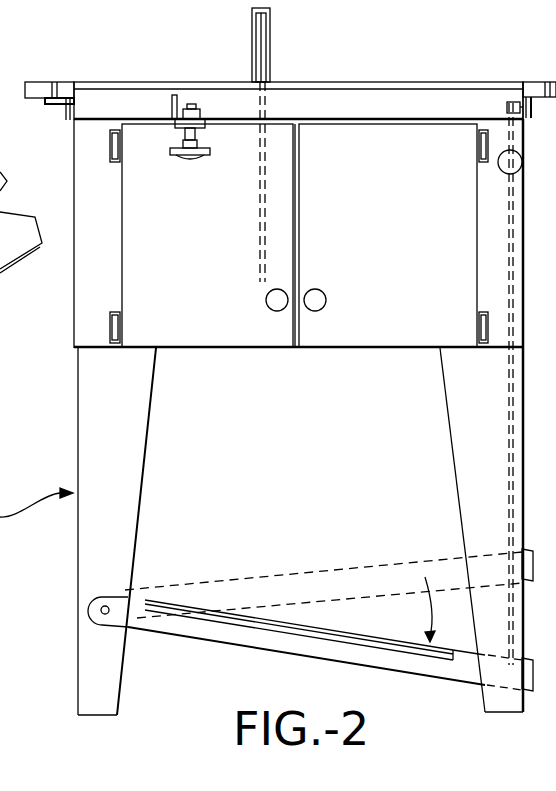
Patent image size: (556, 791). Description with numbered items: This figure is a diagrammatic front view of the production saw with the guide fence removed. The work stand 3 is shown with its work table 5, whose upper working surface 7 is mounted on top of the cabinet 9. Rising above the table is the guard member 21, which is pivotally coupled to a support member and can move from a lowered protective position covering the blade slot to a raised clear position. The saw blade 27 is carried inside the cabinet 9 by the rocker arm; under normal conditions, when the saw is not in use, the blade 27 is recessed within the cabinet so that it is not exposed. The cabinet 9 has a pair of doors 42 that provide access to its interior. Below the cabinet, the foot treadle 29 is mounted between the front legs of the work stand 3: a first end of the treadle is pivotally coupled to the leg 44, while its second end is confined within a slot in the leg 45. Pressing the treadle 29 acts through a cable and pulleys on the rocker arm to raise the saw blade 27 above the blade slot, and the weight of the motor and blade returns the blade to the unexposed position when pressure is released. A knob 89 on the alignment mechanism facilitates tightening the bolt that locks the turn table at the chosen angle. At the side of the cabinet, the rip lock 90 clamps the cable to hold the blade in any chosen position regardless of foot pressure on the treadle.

The work stand 3 is at (530, 250).
The work table 5 is at (453, 82).
The working surface 7 is at (148, 82).
The cabinet 9 is at (93, 303).
The guard member 21 is at (270, 13).
The saw blade 27 is at (265, 50).
The foot treadle 29 is at (245, 645).
The doors 42 is at (237, 325).
The leg 44 is at (100, 540).
The leg 45 is at (467, 495).
The knob 89 is at (194, 158).
The rip lock 90 is at (522, 164).